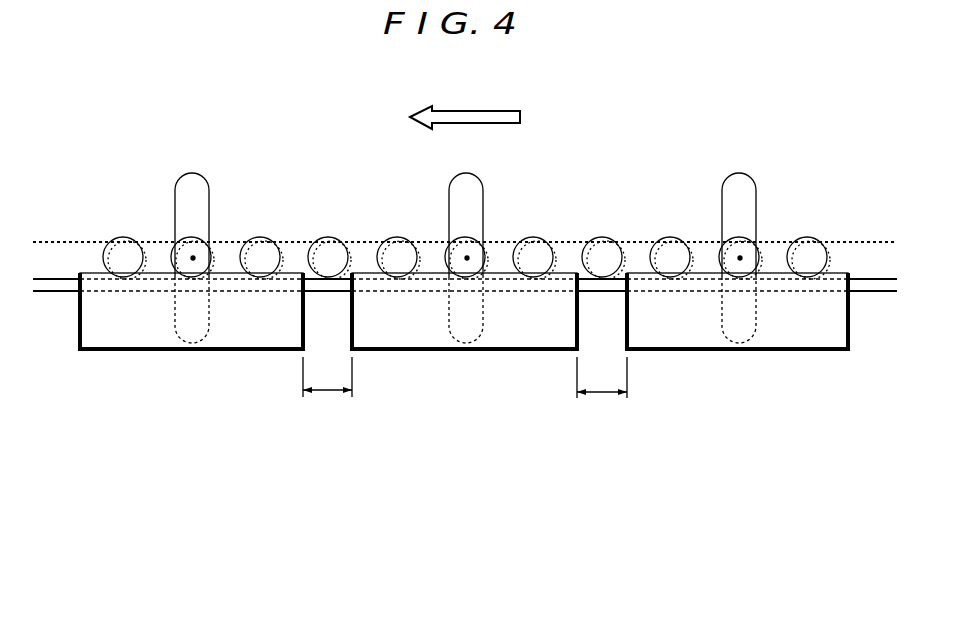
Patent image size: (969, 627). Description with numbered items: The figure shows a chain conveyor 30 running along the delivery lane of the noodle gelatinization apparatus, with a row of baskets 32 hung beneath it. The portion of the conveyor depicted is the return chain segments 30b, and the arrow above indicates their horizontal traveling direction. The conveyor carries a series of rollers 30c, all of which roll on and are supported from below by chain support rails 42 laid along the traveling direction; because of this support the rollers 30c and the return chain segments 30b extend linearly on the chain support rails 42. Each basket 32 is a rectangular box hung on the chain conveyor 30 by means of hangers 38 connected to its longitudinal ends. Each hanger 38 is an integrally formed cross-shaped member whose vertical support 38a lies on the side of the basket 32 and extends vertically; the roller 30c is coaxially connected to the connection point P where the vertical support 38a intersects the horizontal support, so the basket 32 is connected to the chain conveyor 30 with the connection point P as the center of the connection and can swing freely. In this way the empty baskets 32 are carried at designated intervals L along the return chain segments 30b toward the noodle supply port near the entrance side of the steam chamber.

The chain conveyor 30 is at (465, 191).
The return chain segments 30b is at (572, 236).
The roller 30c is at (184, 247).
The basket 32 is at (247, 327).
The hanger 38 is at (512, 236).
The vertical support 38a is at (192, 178).
The chain support rails 42 is at (333, 283).
The connection point P is at (195, 256).
The designated intervals L is at (465, 377).